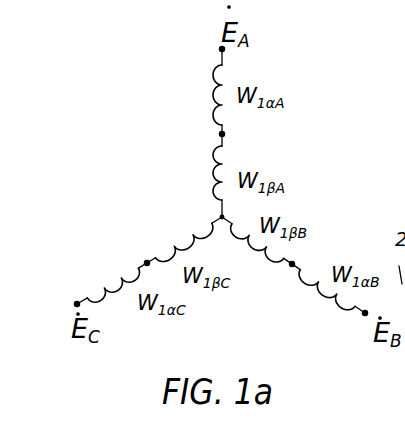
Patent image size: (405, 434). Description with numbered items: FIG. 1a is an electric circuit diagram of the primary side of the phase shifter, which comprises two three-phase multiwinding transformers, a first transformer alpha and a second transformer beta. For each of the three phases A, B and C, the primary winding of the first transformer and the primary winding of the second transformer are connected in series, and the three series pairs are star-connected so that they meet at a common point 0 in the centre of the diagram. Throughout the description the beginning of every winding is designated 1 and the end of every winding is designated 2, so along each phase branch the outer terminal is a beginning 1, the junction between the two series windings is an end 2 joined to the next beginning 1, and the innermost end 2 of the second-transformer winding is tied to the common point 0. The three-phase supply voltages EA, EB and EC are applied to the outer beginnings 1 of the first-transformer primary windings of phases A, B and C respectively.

The winding beginning 1 is at (222, 178).
The winding end 2 is at (223, 193).
The common point 0 is at (222, 236).